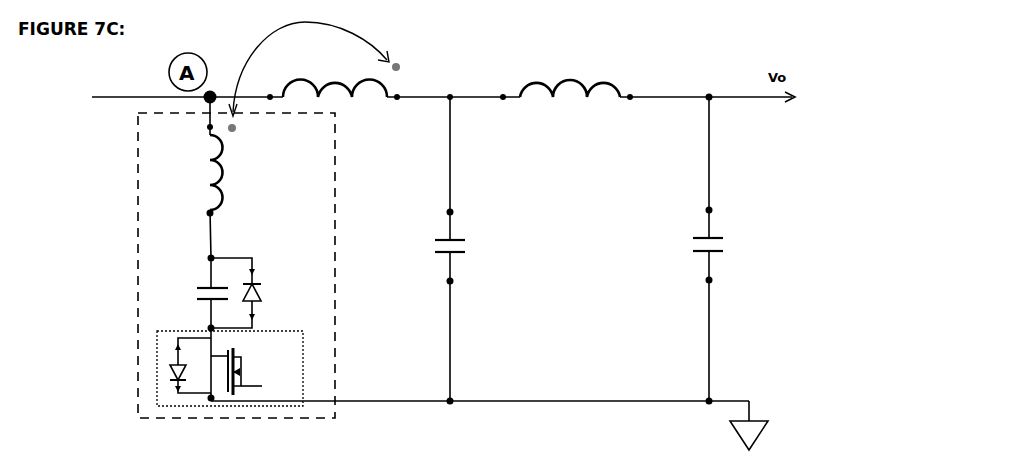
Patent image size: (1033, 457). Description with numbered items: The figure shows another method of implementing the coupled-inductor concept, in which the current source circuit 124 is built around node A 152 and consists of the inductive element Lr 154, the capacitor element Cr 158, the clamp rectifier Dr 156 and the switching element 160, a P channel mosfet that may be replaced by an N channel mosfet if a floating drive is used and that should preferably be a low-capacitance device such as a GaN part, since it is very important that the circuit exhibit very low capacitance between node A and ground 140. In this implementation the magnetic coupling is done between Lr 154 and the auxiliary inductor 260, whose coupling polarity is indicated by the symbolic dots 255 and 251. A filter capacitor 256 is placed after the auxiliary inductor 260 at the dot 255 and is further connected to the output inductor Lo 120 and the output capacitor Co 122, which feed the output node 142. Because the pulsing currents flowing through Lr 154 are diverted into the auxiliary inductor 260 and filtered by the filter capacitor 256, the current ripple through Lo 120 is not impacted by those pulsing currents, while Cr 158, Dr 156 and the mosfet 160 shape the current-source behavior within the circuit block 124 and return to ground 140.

The node A (switching node) 152 is at (212, 85).
The Lox 260 is at (323, 78).
The symbolic dot 255 is at (403, 70).
The Lo 120 is at (531, 73).
The output node Vo 142 is at (717, 103).
The snubber/resonant circuit 124 is at (153, 200).
The symbolic dot 251 is at (237, 130).
The Lr 154 is at (238, 188).
The clamp rectifier Dr 156 is at (273, 283).
The capacitor element Cr 158 is at (198, 310).
The P channel mosfet 160 is at (157, 377).
The filter capacitor Cox 256 is at (458, 257).
The Co 122 is at (717, 255).
The ground 140 is at (715, 393).